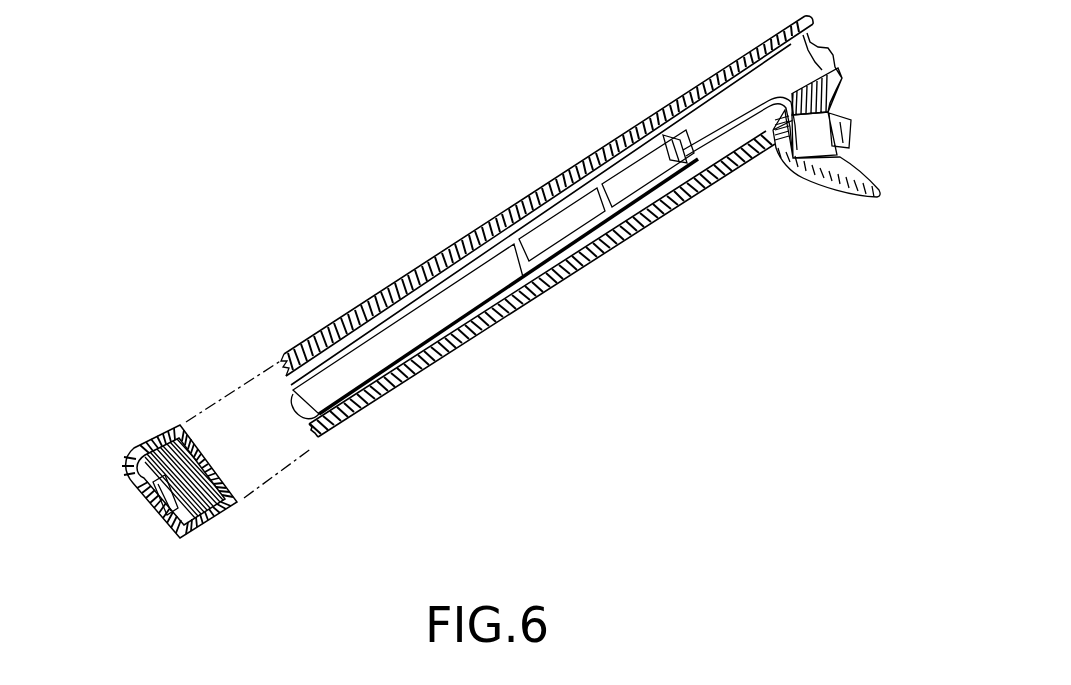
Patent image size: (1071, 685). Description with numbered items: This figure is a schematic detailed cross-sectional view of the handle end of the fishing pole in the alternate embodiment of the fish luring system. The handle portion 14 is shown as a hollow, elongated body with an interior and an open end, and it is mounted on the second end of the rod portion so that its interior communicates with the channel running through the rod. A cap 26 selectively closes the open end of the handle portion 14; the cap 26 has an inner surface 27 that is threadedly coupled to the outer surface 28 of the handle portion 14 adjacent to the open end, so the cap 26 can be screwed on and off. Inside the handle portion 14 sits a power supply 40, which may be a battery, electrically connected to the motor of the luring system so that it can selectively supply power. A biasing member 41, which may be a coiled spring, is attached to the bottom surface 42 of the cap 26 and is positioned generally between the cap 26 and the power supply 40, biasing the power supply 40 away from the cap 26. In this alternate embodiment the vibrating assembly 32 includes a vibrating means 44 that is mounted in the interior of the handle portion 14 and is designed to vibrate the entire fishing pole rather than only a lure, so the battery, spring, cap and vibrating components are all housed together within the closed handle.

The handle portion 14 is at (523, 318).
The cap 26 is at (175, 538).
The inner surface 27 is at (220, 512).
The outer surface 28 is at (276, 372).
The vibrating assembly 32 is at (473, 222).
The power supply 40 is at (612, 178).
The biasing member 41 is at (147, 503).
The bottom surface 42 is at (168, 434).
The vibrating means 44 is at (408, 325).